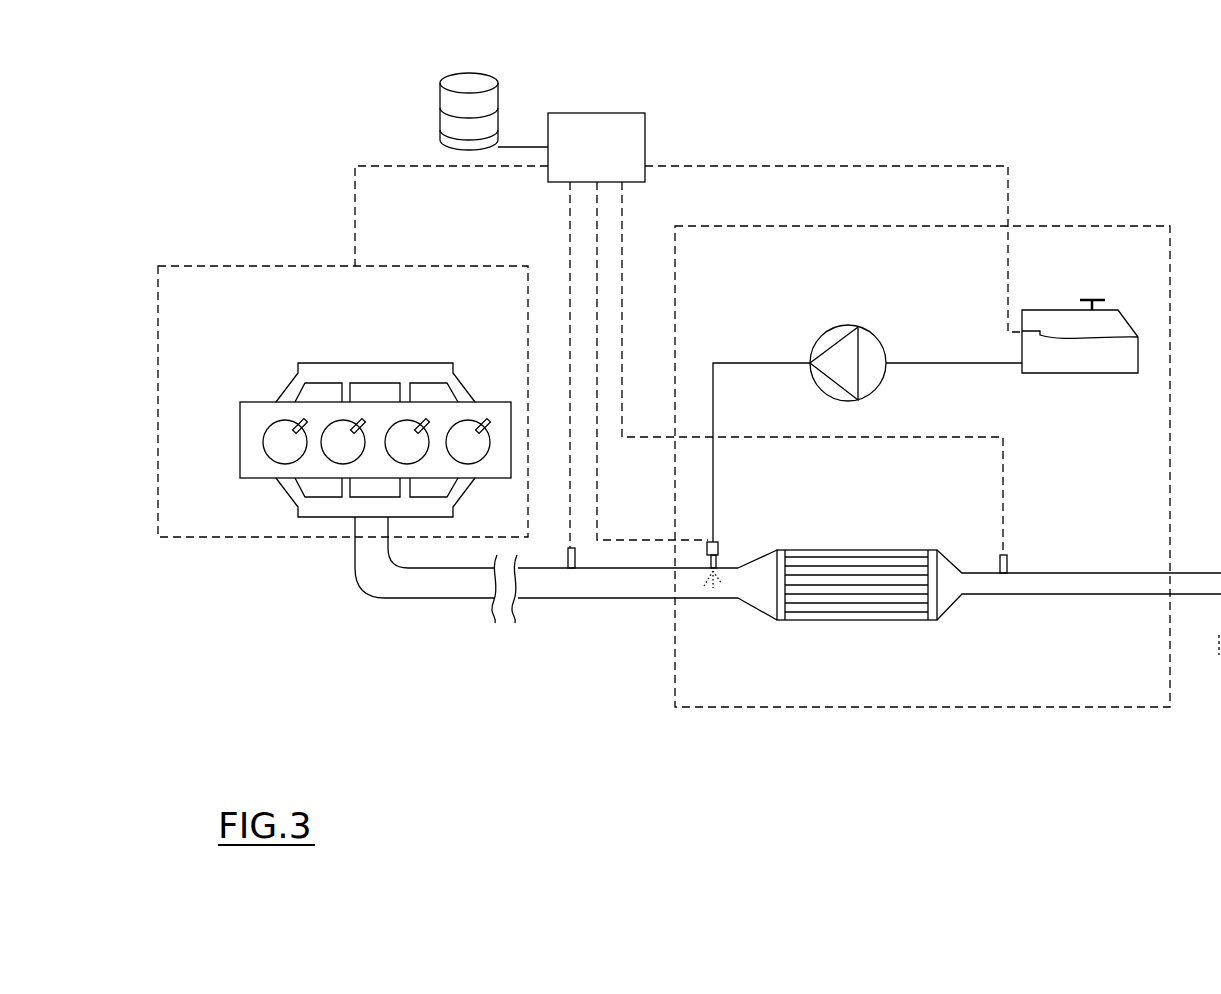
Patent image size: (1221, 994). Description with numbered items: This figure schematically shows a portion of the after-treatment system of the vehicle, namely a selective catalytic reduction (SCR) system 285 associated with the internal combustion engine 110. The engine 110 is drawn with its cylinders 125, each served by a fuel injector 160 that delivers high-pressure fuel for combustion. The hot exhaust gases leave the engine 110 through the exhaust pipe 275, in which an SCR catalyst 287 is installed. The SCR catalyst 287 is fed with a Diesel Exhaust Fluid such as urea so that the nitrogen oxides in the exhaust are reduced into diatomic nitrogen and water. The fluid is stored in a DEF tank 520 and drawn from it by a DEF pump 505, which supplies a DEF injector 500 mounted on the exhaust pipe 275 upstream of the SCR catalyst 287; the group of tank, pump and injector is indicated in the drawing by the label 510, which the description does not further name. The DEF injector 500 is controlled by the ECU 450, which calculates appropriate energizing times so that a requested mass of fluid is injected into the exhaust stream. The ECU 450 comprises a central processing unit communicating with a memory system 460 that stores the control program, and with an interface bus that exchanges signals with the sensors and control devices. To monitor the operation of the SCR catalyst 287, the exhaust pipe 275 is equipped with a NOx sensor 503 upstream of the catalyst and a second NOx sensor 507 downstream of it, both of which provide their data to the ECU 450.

The internal combustion engine 110 is at (343, 351).
The cylinder 125 is at (323, 420).
The fuel injector 160 is at (297, 430).
The exhaust pipe 275 is at (465, 598).
The selective catalytic reduction (SCR) system 285 is at (755, 707).
The SCR catalyst 287 is at (845, 621).
The ECU 450 is at (585, 113).
The memory system (data carrier) 460 is at (440, 127).
The DEF injector 500 is at (727, 555).
The NOx sensor (upstream) 503 is at (560, 568).
The DEF pump 505 is at (868, 334).
The NOx sensor (downstream) 507 is at (1005, 555).
The reductant delivery system 510 is at (921, 413).
The DEF tank 520 is at (1058, 310).